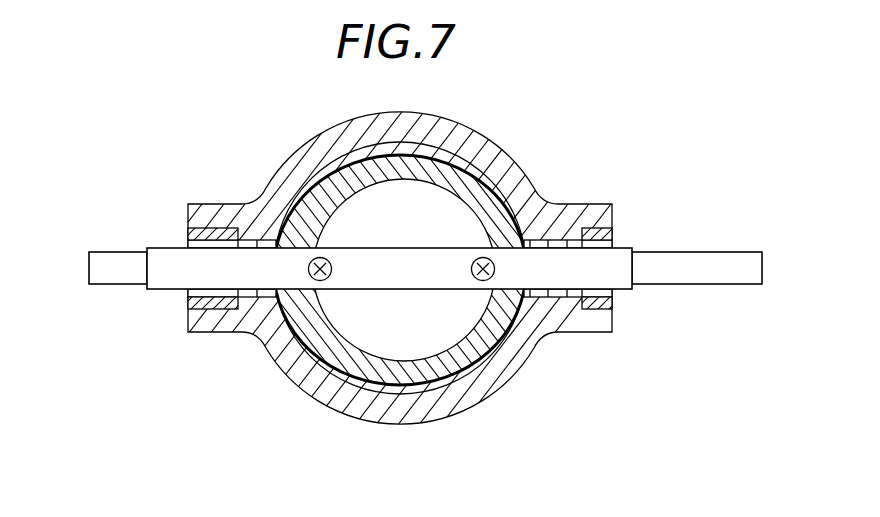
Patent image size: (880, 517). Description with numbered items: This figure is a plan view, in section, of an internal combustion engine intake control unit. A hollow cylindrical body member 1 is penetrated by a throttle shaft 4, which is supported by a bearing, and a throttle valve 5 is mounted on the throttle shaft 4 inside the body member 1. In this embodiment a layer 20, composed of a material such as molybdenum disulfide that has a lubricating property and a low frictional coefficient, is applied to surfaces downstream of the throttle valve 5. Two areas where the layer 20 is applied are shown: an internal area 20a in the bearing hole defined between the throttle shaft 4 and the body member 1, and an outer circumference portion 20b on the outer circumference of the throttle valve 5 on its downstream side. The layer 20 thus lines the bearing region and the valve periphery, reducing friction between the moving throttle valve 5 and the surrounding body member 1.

The hollow cylindrical body member 1 is at (510, 177).
The throttle shaft 4 is at (683, 253).
The throttle valve 5 is at (343, 223).
The layer 20 is at (310, 395).
The internal area 20a is at (252, 335).
The outer circumference portion 20b is at (378, 392).